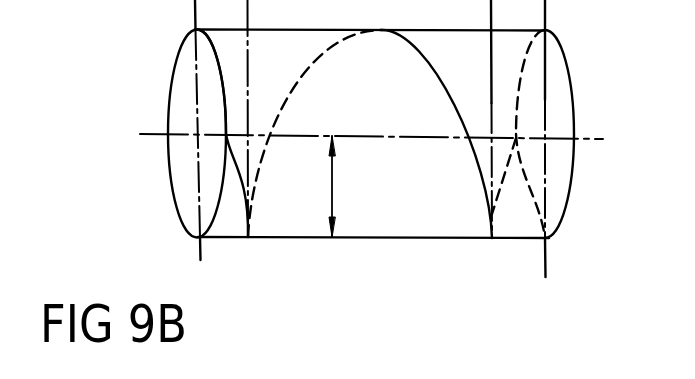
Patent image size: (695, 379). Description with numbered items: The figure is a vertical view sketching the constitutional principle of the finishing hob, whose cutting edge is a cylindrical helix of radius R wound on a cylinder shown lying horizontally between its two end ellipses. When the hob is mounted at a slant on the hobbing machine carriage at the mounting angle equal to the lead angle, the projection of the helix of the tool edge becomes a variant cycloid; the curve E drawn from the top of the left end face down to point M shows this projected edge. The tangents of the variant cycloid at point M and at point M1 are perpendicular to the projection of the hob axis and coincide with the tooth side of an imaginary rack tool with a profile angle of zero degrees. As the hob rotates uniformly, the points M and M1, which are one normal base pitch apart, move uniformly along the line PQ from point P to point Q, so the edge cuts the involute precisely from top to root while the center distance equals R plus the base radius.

The pitch line end point P is at (187, 138).
The point M is at (247, 139).
The point M1 is at (495, 139).
The pitch line end point Q is at (558, 140).
The projected helix of the tool edge E is at (222, 134).
The radius of the cylindrical helix R is at (317, 186).